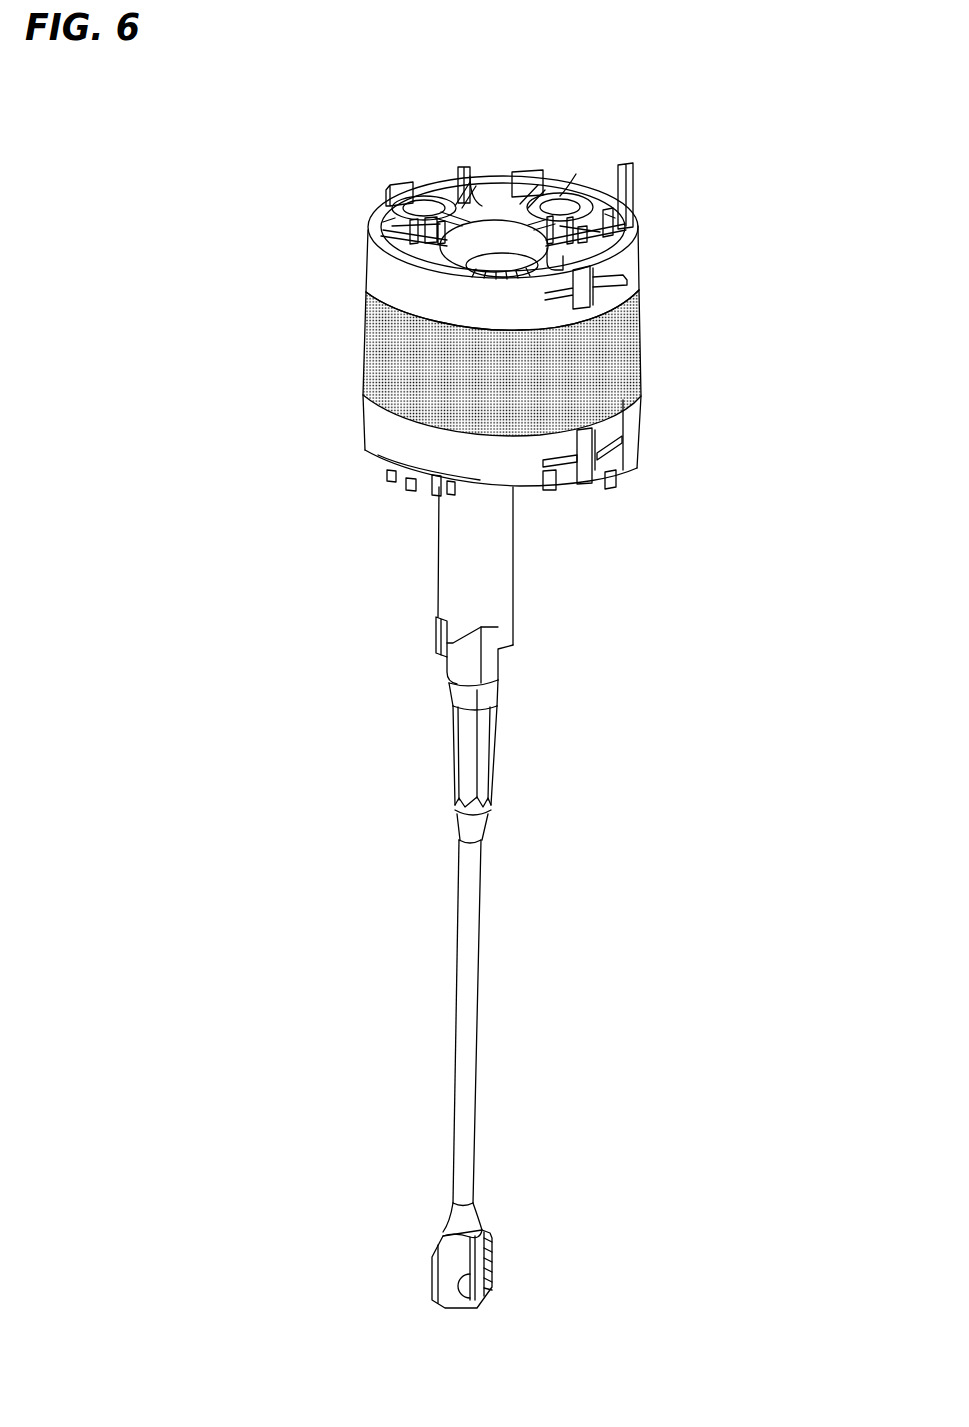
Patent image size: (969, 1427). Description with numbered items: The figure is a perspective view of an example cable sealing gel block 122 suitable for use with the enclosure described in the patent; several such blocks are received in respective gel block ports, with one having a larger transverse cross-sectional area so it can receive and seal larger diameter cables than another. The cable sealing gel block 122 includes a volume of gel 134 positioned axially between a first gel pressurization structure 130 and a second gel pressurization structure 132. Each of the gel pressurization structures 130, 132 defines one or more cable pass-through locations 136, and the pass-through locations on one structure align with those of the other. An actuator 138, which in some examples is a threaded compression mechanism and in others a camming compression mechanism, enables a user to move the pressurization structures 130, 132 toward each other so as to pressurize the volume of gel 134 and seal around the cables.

The cable sealing gel block 122 is at (322, 398).
The first gel pressurization structure 130 is at (382, 439).
The second gel pressurization structure 132 is at (377, 268).
The volume of gel 134 is at (607, 365).
The cable pass-through locations 136 is at (500, 258).
The actuator 138 is at (480, 881).